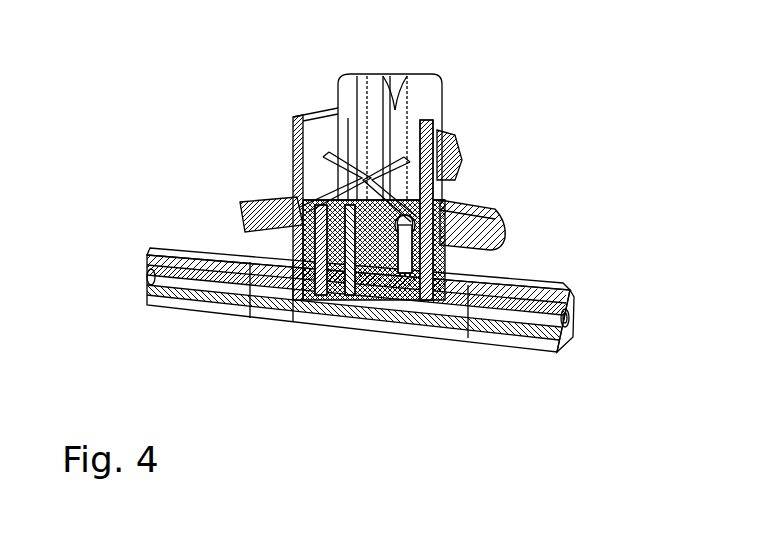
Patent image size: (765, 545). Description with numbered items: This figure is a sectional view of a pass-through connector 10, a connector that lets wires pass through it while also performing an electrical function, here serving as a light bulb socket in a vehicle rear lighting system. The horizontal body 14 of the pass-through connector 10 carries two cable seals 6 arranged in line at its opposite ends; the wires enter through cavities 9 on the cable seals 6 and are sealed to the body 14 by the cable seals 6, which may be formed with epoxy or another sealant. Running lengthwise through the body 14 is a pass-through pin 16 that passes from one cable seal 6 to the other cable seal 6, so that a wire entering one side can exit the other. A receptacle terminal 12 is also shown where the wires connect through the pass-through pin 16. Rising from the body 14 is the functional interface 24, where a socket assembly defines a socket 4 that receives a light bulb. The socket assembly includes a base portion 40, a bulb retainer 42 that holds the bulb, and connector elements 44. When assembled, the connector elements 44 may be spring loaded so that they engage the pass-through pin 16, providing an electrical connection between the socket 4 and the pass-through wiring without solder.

The socket 4 is at (398, 90).
The cable seal 6 is at (165, 306).
The cavity 9 is at (222, 308).
The pass-through connector 10 is at (603, 137).
The receptacle terminal 12 is at (253, 327).
The body 14 is at (293, 330).
The pass-through pin 16 is at (375, 332).
The functional interface 24 is at (475, 202).
The base portion 40 is at (447, 178).
The bulb retainer 42 is at (318, 218).
The connector element 44 is at (432, 158).